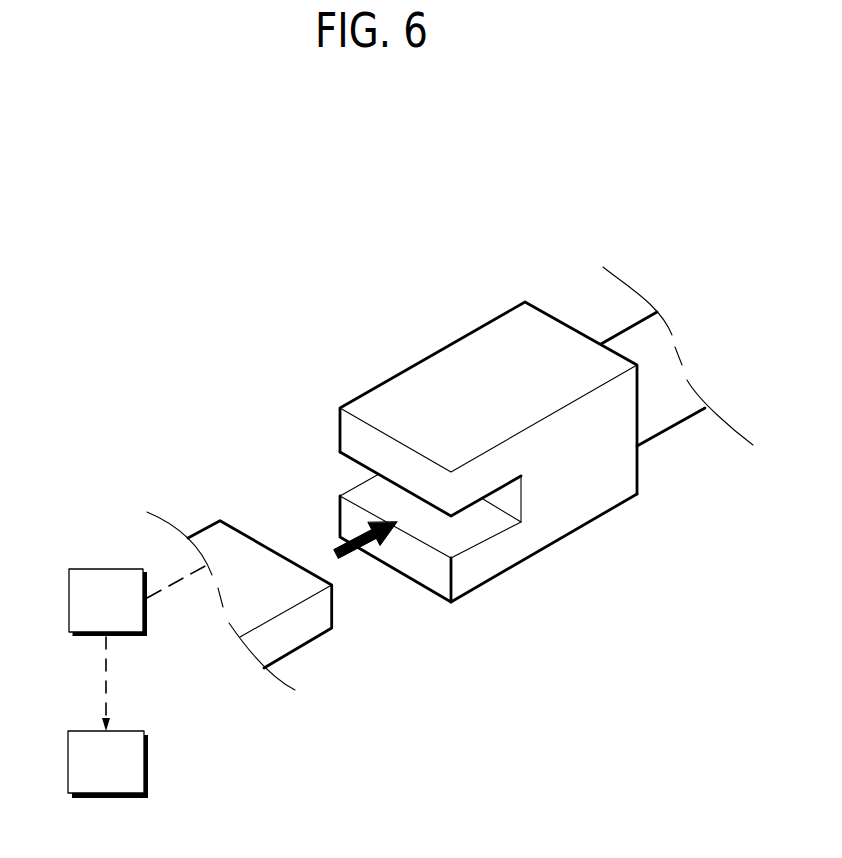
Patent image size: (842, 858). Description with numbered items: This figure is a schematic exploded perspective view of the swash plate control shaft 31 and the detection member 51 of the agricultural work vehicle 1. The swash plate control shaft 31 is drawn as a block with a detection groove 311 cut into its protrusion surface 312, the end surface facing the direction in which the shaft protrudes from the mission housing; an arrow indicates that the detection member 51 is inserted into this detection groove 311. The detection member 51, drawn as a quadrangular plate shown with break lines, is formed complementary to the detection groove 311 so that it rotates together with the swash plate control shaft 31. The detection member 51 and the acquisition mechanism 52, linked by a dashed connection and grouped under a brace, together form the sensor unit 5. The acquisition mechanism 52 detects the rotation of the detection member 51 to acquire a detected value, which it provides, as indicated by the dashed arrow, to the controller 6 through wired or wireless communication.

The agricultural work vehicle 1 is at (103, 297).
The swash plate control shaft 31 is at (494, 358).
The detection groove 311 is at (487, 524).
The protrusion surface 312 is at (362, 443).
The sensor unit 5 is at (187, 457).
The detection member 51 is at (223, 543).
The acquisition mechanism 52 is at (98, 569).
The controller 6 is at (147, 764).